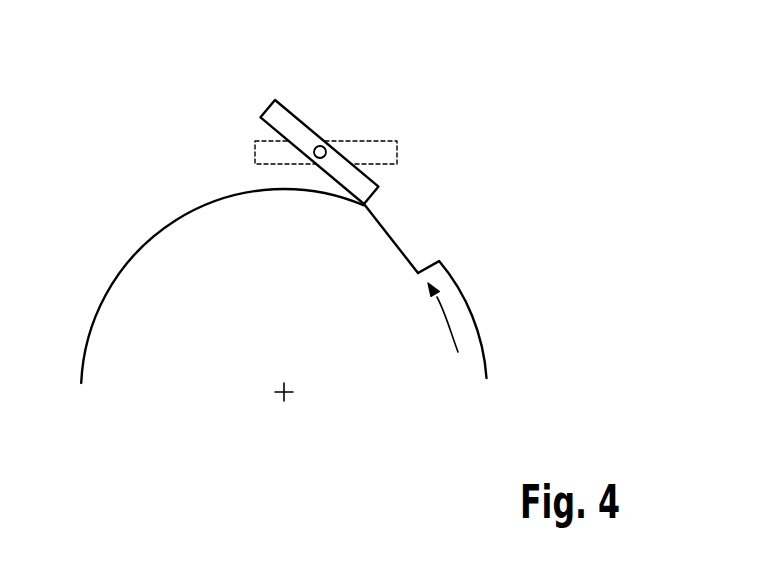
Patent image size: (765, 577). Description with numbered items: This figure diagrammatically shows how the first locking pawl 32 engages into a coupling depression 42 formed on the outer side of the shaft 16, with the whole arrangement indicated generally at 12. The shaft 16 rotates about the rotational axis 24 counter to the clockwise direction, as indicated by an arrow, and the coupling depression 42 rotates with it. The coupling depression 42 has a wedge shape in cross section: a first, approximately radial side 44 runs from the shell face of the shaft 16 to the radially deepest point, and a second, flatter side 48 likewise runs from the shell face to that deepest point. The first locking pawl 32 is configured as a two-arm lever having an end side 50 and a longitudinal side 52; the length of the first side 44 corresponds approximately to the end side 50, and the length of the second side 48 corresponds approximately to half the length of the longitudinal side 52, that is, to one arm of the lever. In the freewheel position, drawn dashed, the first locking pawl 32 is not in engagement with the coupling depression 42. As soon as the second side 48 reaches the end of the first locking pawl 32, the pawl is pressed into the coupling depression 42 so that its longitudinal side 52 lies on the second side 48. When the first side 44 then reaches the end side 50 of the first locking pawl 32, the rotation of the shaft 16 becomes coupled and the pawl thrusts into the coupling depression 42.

The device 12 is at (420, 90).
The shaft 16 is at (120, 325).
The rotational axis 24 is at (280, 392).
The first locking pawl 32 is at (283, 123).
The coupling depression 42 is at (404, 268).
The first side 44 is at (429, 263).
The second side 48 is at (384, 233).
The end side 50 is at (374, 197).
The longitudinal side 52 is at (326, 173).